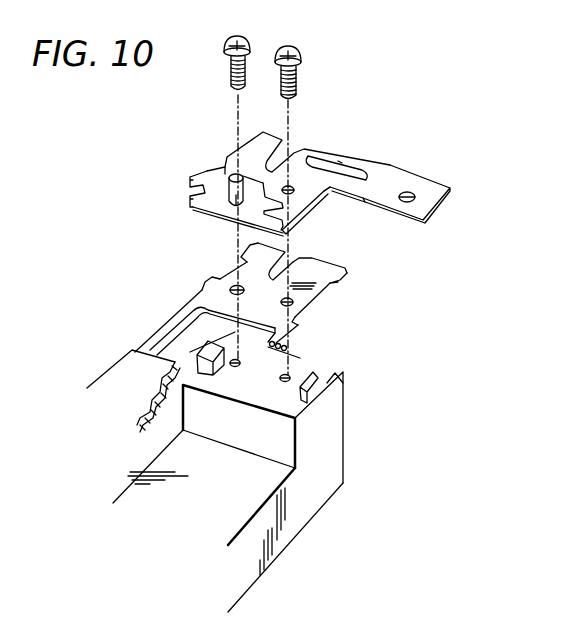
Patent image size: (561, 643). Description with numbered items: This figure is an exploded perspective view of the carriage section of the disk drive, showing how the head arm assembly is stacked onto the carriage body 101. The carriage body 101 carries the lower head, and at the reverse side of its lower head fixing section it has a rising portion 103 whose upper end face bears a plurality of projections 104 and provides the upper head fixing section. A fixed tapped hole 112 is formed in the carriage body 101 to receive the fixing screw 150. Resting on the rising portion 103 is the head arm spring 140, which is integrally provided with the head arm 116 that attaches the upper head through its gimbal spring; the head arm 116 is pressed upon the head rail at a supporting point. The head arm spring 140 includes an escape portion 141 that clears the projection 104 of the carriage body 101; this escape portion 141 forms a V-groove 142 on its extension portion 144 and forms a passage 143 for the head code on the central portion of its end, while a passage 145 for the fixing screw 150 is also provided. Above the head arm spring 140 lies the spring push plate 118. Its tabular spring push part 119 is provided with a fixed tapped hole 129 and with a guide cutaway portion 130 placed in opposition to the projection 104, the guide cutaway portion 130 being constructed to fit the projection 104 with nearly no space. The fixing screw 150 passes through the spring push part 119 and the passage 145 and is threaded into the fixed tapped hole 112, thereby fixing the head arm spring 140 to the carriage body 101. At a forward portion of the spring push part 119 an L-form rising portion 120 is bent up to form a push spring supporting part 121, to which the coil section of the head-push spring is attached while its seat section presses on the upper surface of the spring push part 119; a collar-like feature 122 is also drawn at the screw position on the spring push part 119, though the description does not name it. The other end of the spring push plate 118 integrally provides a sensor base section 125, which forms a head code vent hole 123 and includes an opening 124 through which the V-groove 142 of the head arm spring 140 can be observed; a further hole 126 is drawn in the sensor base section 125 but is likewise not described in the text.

The carriage body 101 is at (300, 530).
The rising portion 103 is at (343, 425).
The projections 104 is at (205, 342).
The fixed tapped hole 112 is at (237, 367).
The head arm 116 is at (122, 365).
The spring push plate 118 is at (312, 185).
The spring push part 119 is at (313, 207).
The L-form rising portion 120 is at (282, 217).
The push spring supporting part 121 is at (192, 183).
The burred collar 122 is at (231, 200).
The head code vent hole 123 is at (308, 151).
The opening 124 is at (348, 168).
The sensor base section 125 is at (425, 185).
The terminal hole 126 is at (418, 198).
The fixed tapped hole 129 is at (340, 158).
The guide cutaway portion 130 is at (320, 180).
The head arm spring 140 is at (243, 289).
The escape portion 141 is at (198, 296).
The V-groove 142 is at (212, 277).
The passage of the head code 143 is at (284, 262).
The extension portion 144 is at (250, 246).
The passage of the fixing screw 145 is at (300, 321).
The fixing screw 150 is at (250, 44).